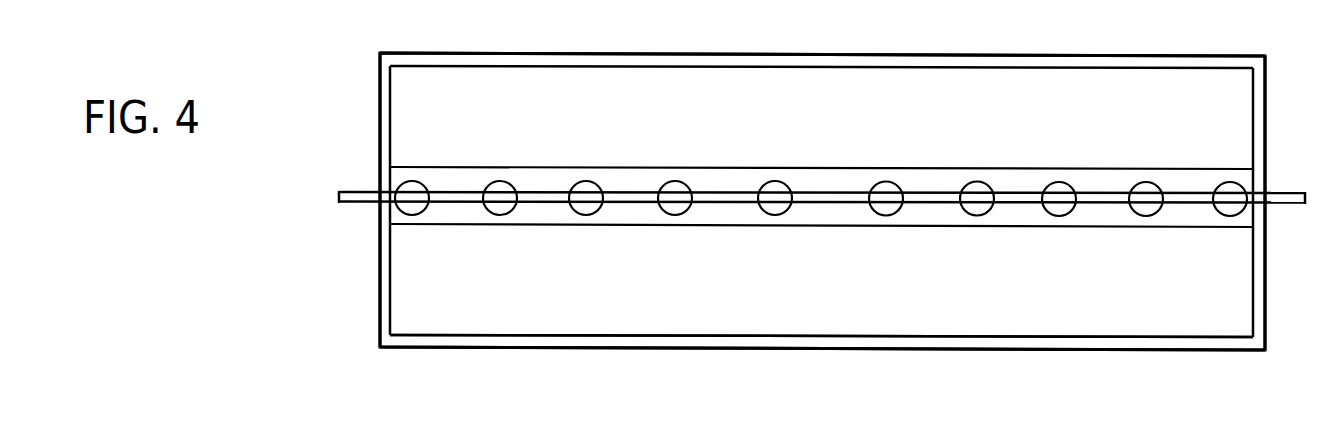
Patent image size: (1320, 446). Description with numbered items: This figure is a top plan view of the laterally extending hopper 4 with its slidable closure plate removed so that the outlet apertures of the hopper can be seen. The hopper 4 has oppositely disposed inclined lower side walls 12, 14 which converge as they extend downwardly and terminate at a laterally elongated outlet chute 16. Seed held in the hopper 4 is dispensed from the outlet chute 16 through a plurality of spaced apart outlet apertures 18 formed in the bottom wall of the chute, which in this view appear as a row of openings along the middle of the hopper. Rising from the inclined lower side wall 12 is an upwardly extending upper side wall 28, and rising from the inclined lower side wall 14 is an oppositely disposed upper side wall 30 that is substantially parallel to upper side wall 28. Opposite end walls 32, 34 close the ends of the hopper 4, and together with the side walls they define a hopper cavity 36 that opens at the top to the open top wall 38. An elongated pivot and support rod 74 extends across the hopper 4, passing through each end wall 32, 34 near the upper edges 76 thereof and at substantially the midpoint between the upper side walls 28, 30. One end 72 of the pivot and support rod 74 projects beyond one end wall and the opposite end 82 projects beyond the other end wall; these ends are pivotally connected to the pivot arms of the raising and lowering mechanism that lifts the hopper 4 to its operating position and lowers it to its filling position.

The hopper 4 is at (1022, 55).
The inclined lower side wall 12 is at (635, 88).
The inclined lower side wall 14 is at (647, 321).
The outlet chute 16 is at (833, 215).
The outlet apertures 18 is at (775, 182).
The upper side wall 28 is at (548, 54).
The upper side wall 30 is at (814, 349).
The end wall 32 is at (380, 118).
The end wall 34 is at (1265, 293).
The hopper cavity 36 is at (898, 87).
The open top wall 38 is at (977, 318).
The end of pivot and support rod 72 is at (337, 198).
The pivot and support rod 74 is at (540, 204).
The upper edges 76 is at (1258, 110).
The opposite end of pivot and support rod 82 is at (1306, 192).